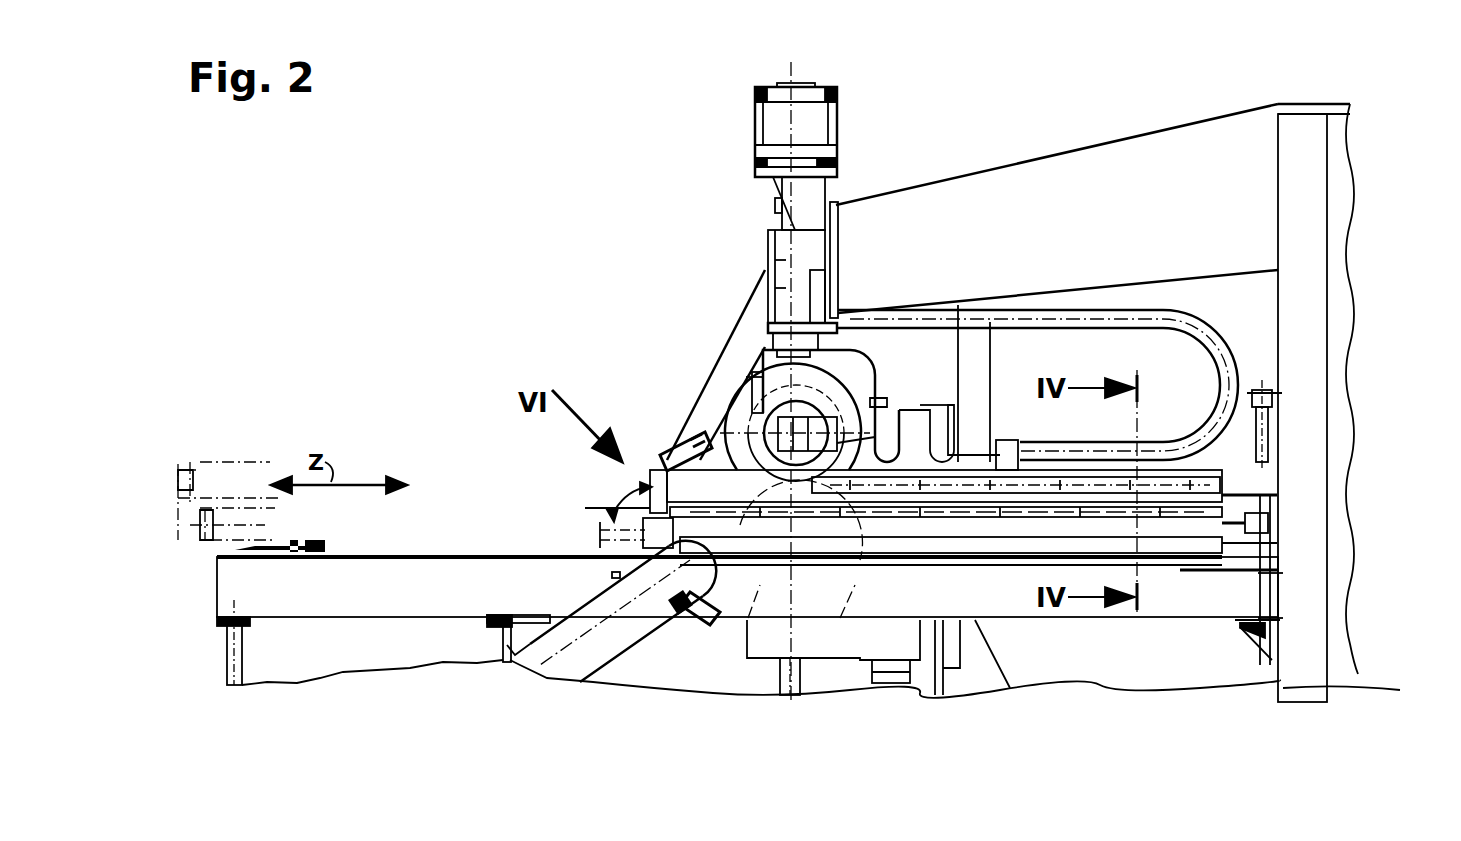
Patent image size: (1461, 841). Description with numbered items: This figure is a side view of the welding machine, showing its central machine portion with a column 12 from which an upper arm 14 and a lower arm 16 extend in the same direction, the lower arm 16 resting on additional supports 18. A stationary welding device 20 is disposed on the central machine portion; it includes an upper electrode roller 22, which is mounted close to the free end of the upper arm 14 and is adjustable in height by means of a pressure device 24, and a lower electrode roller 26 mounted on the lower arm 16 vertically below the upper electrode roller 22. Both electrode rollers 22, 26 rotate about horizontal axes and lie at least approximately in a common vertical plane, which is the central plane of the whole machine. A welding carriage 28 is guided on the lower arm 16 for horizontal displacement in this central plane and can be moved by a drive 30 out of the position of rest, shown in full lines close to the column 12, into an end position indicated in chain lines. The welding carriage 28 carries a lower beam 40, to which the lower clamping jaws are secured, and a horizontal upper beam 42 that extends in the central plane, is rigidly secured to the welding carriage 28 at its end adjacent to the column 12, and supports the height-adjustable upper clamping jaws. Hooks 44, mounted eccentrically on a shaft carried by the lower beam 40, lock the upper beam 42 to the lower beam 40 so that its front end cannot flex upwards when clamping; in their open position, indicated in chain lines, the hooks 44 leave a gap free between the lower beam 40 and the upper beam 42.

The column 12 is at (1310, 268).
The upper arm 14 is at (1052, 195).
The lower arm 16 is at (325, 590).
The additional supports 18 is at (228, 667).
The stationary welding device 20 is at (794, 220).
The upper electrode roller 22 is at (740, 405).
The pressure device 24 is at (818, 131).
The lower electrode roller 26 is at (760, 582).
The welding carriage 28 is at (1223, 489).
The drive 30 is at (574, 660).
The lower beam 40 is at (1208, 470).
The upper beam 42 is at (1197, 478).
The hooks 44 is at (650, 476).